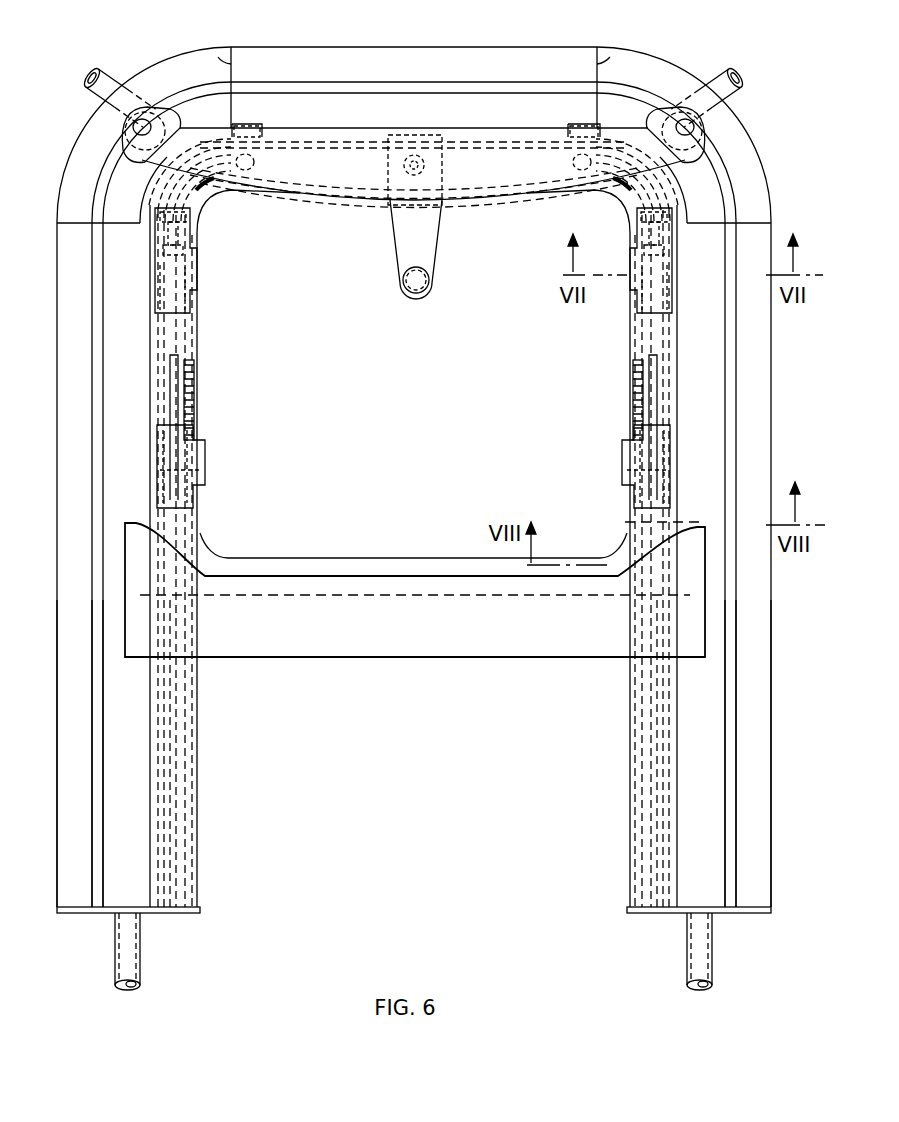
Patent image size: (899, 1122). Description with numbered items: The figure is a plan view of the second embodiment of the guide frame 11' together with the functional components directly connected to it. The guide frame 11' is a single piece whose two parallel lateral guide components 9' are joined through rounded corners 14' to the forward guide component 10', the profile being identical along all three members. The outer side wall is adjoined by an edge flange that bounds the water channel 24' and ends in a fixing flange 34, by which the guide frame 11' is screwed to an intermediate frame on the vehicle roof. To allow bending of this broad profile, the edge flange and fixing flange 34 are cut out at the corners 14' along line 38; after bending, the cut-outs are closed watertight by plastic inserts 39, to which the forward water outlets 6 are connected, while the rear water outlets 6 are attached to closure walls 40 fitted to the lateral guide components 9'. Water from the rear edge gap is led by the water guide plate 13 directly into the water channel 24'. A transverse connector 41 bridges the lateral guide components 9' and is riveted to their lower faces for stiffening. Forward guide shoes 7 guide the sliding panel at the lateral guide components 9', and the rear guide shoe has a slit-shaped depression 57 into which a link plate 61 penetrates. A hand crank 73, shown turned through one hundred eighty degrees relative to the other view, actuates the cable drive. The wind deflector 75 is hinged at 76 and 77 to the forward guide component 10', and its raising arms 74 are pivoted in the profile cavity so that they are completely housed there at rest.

The water outlet 6 is at (108, 80).
The forward guide shoe 7 is at (204, 265).
The lateral guide component 9' is at (413, 556).
The forward guide component 10' is at (413, 217).
The guide frame 11' is at (413, 753).
The water guide plate 13 is at (414, 660).
The corner 14' is at (412, 129).
The water channel 24' is at (417, 761).
The fixing flange 34 is at (78, 838).
The cut-out line 38 is at (218, 57).
The plastic insert 39 is at (165, 72).
The closure wall 40 is at (80, 914).
The transverse connector 41 is at (378, 556).
The slit-shaped depression 57 is at (172, 460).
The link plate 61 is at (172, 400).
The hand crank 73 is at (432, 238).
The raising arm 74 is at (170, 198).
The wind deflector 75 is at (362, 198).
The hinge 76 is at (262, 128).
The hinge 77 is at (568, 128).